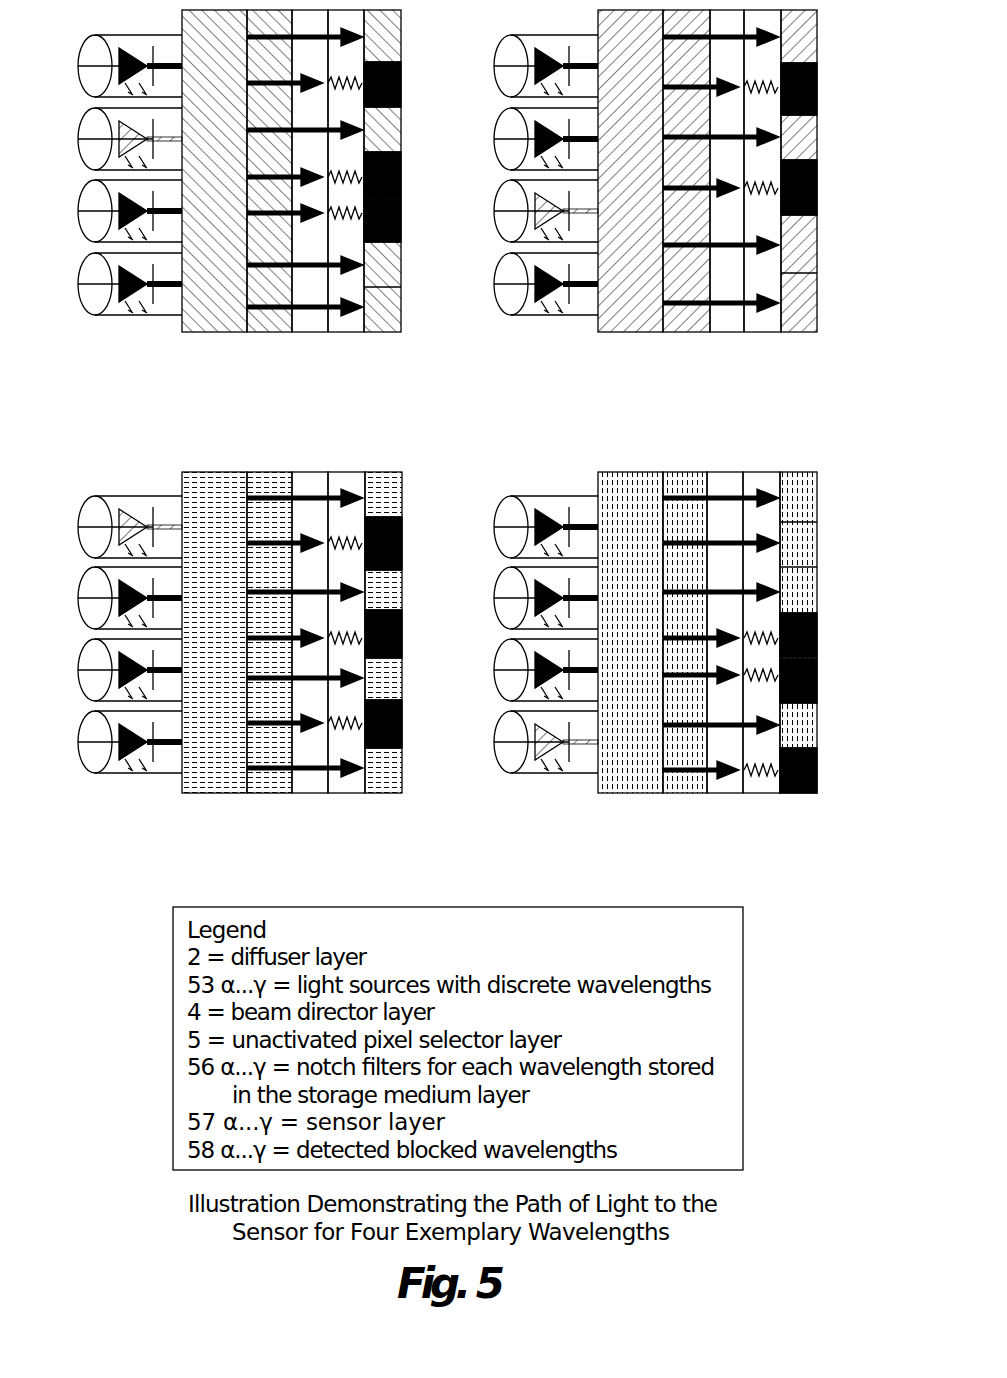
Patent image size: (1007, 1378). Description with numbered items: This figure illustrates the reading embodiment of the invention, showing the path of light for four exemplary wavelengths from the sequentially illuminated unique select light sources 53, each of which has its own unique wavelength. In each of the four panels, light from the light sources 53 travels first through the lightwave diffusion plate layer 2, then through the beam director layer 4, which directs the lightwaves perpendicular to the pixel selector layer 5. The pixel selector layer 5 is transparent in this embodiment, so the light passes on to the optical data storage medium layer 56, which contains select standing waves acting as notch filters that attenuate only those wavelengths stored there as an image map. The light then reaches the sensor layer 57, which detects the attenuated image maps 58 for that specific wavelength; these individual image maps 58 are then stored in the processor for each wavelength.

The lightwave diffusion plate layer 2 is at (198, 332).
The beam director layer 4 is at (258, 332).
The pixel selector layer 5 is at (312, 332).
The unique select light sources 53 is at (310, 428).
The optical data storage medium layer 56 is at (558, 452).
The sensor layer 57 is at (597, 437).
The individual image maps 58 is at (622, 427).